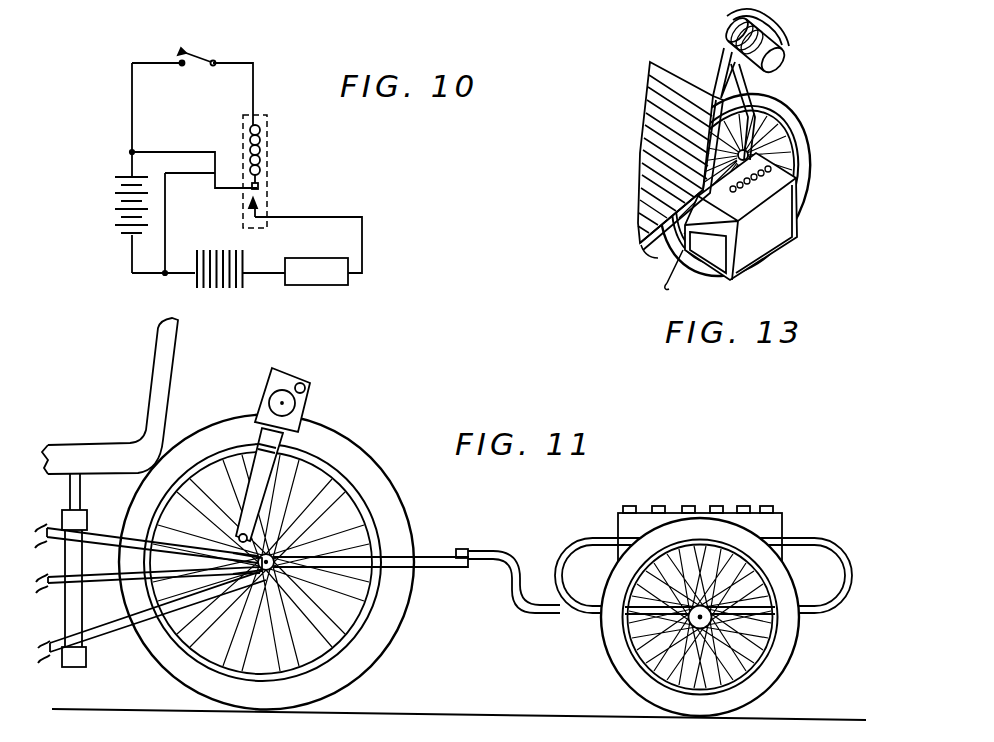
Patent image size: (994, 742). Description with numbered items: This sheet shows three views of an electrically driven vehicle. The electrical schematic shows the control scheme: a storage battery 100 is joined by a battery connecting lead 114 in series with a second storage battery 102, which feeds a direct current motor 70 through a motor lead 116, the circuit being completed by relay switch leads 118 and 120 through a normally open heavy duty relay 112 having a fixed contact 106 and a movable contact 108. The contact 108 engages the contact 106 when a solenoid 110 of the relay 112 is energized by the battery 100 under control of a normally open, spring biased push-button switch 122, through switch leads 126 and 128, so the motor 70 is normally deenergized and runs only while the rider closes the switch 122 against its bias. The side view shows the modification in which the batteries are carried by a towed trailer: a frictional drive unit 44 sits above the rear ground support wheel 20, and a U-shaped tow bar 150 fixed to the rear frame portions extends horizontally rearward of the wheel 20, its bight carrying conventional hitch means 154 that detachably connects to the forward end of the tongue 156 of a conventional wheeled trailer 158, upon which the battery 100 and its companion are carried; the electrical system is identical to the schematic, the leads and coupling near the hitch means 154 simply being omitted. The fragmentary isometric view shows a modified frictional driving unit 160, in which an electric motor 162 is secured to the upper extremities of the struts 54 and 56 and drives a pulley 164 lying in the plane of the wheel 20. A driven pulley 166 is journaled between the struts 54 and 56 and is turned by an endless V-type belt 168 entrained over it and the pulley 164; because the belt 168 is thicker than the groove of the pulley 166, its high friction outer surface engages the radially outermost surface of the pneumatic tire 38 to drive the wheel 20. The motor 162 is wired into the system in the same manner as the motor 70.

In FIG. 10, the switch 122 is at (204, 56).
In FIG. 10, the switch lead 126 is at (254, 63).
In FIG. 10, the switch lead 128 is at (130, 112).
In FIG. 10, the relay switch lead 120 is at (177, 150).
In FIG. 10, the relay 112 is at (258, 118).
In FIG. 10, the solenoid 110 is at (260, 145).
In FIG. 10, the fixed contact 106 is at (262, 188).
In FIG. 10, the movable contact 108 is at (262, 204).
In FIG. 10, the relay switch lead 118 is at (348, 217).
In FIG. 10, the storage battery 100 is at (117, 212).
In FIG. 11, the storage battery 100 is at (775, 523).
In FIG. 13, the storage battery 100 is at (792, 213).
In FIG. 10, the battery connecting lead 114 is at (128, 265).
In FIG. 10, the storage battery 102 is at (192, 278).
In FIG. 10, the motor lead 116 is at (266, 275).
In FIG. 10, the direct current motor 70 is at (320, 285).
In FIG. 11, the frictional drive unit 44 is at (320, 398).
In FIG. 11, the ground support wheel 20 is at (358, 664).
In FIG. 13, the ground support wheel 20 is at (808, 153).
In FIG. 11, the tow bar 150 is at (420, 564).
In FIG. 11, the hitch means 154 is at (472, 540).
In FIG. 11, the tongue 156 is at (523, 612).
In FIG. 11, the trailer 158 is at (805, 647).
In FIG. 13, the endless belt 168 is at (737, 52).
In FIG. 13, the pulley 164 is at (766, 40).
In FIG. 13, the frictional driving unit 160 is at (797, 50).
In FIG. 13, the electric motor 162 is at (787, 63).
In FIG. 13, the driven pulley 166 is at (807, 97).
In FIG. 13, the strut 54 is at (797, 133).
In FIG. 13, the strut 56 is at (713, 94).
In FIG. 13, the pneumatic tire 38 is at (812, 166).